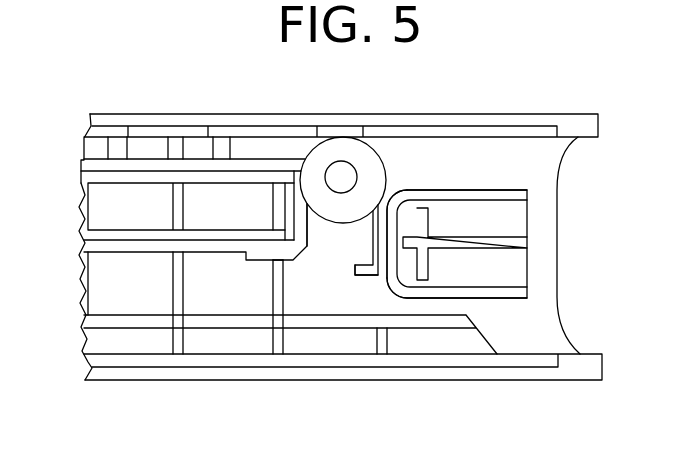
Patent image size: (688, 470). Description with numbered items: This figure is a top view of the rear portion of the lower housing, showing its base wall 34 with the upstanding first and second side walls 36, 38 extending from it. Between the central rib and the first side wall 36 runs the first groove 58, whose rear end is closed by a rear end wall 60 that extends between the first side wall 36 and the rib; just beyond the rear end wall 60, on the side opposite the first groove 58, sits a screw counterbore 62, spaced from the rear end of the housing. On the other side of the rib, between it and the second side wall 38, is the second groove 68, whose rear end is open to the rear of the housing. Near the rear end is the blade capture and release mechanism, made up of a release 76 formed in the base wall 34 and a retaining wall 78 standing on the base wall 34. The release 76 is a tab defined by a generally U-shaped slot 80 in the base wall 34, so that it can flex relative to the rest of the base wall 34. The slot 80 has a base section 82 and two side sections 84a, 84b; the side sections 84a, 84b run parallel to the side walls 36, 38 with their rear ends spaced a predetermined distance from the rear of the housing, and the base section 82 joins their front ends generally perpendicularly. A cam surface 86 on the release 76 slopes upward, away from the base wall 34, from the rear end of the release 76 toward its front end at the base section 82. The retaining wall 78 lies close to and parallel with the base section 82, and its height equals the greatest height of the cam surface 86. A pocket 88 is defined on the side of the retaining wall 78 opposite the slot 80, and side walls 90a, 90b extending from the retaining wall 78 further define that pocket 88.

The base wall 34 is at (542, 165).
The first side wall 36 is at (185, 135).
The second side wall 38 is at (188, 370).
The first groove 58 is at (120, 202).
The rear end wall 60 is at (296, 223).
The screw counterbore 62 is at (340, 148).
The second groove 68 is at (103, 292).
The release 76 is at (487, 210).
The retaining wall 78 is at (372, 252).
The U-shaped slot 80 is at (438, 190).
The base section 82 is at (392, 276).
The side section 84a is at (462, 192).
The side section 84b is at (493, 293).
The cam surface 86 is at (450, 243).
The pocket 88 is at (358, 238).
The side wall 90a is at (392, 194).
The side wall 90b is at (367, 276).